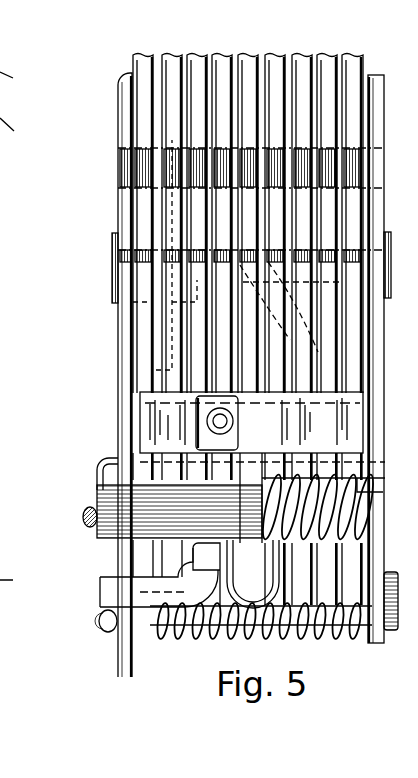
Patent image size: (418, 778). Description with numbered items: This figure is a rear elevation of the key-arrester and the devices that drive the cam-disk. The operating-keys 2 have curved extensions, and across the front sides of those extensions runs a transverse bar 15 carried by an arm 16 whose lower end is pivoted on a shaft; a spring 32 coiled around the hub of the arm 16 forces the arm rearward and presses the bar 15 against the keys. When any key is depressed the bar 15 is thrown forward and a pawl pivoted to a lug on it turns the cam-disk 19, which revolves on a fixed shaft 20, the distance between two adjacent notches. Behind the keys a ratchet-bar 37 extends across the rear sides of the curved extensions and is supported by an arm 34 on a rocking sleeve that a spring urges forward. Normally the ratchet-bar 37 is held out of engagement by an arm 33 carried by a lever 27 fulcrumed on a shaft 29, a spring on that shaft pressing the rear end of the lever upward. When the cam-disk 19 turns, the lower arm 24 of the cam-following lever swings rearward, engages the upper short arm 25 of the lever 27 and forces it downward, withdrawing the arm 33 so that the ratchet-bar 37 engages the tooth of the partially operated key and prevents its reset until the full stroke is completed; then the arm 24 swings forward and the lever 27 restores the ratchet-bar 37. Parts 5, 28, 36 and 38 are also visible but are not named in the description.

The operating-key 2 is at (241, 330).
The side frame plate 5 is at (106, 399).
The transverse bar 15 is at (340, 186).
The arm 16 is at (317, 351).
The cam-disk 19 is at (156, 364).
The fixed shaft 20 is at (340, 283).
The lower arm of lever 24 is at (96, 500).
The upper short arm of lever 25 is at (100, 561).
The lever 27 is at (98, 633).
The lower spring 28 is at (153, 645).
The shaft 29 is at (248, 640).
The spring 32 is at (392, 524).
The arm 33 is at (206, 575).
The arm 34 is at (251, 498).
The housing 36 is at (197, 412).
The ratchet-bar 37 is at (297, 436).
The loop 38 is at (253, 574).